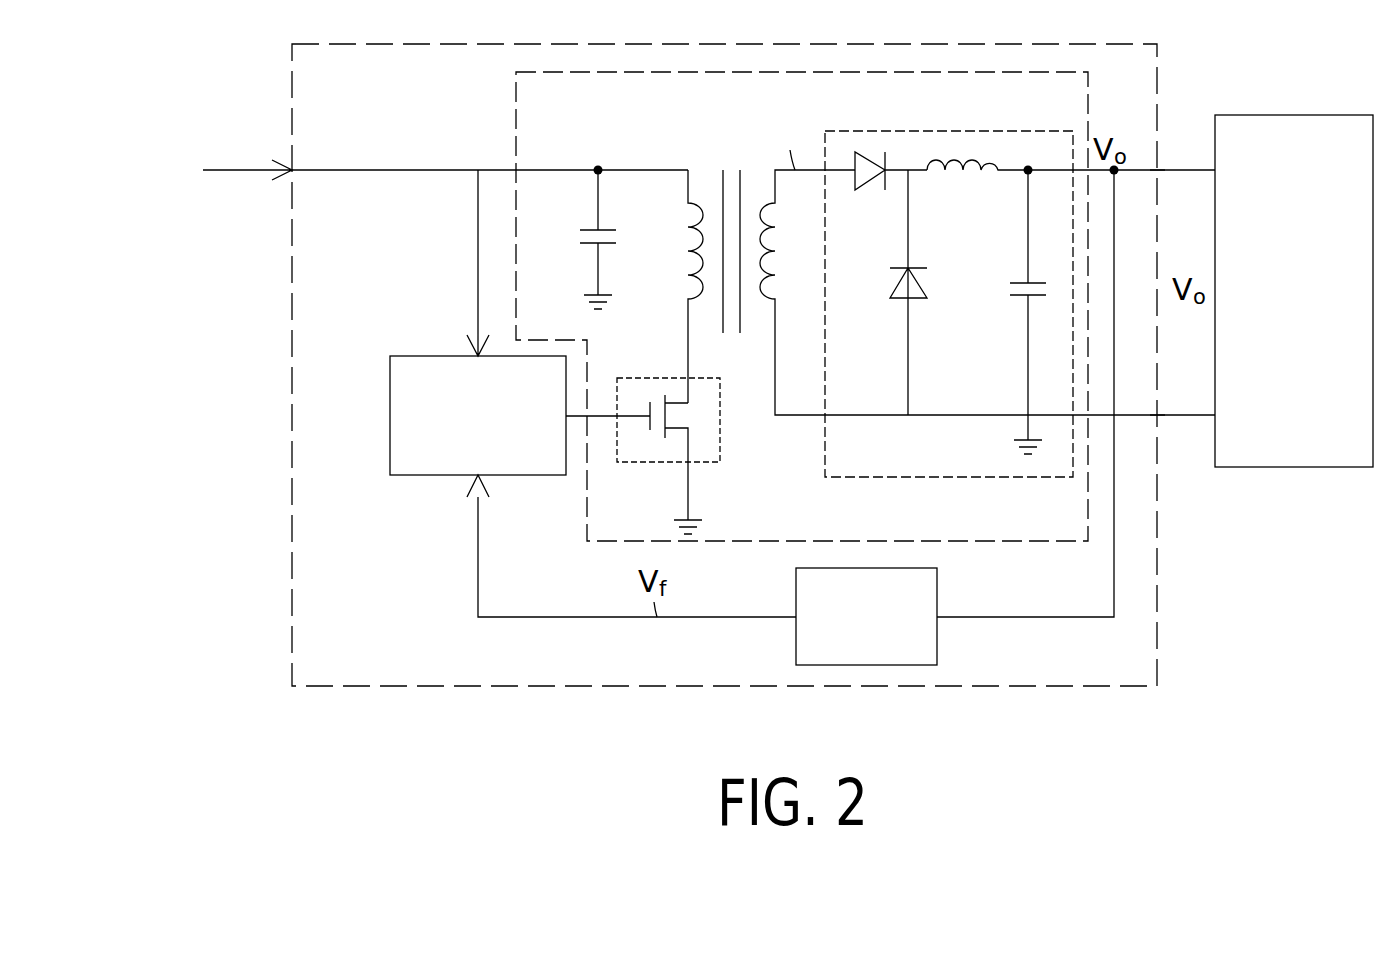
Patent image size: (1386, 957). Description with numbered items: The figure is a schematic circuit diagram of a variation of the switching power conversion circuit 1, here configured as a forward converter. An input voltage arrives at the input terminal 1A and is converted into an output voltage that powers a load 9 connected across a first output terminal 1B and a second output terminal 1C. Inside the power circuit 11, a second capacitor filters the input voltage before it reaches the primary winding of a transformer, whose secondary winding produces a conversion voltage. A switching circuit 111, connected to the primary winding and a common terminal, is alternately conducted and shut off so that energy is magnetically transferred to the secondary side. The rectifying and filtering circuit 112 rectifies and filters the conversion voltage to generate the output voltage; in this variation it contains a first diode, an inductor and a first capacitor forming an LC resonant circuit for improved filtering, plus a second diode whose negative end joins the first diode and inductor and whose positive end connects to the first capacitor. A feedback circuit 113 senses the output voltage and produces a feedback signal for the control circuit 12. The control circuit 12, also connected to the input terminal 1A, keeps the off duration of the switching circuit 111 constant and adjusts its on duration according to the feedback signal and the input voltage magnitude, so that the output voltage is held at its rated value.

The switching power conversion circuit 1 is at (1102, 44).
The input terminal 1A is at (291, 168).
The first output terminal 1B is at (1158, 170).
The second output terminal 1C is at (1158, 416).
The load 9 is at (1328, 115).
The power circuit 11 is at (516, 107).
The switching circuit 111 is at (646, 462).
The rectifying and filtering circuit 112 is at (978, 131).
The feedback circuit 113 is at (938, 592).
The control circuit 12 is at (419, 356).